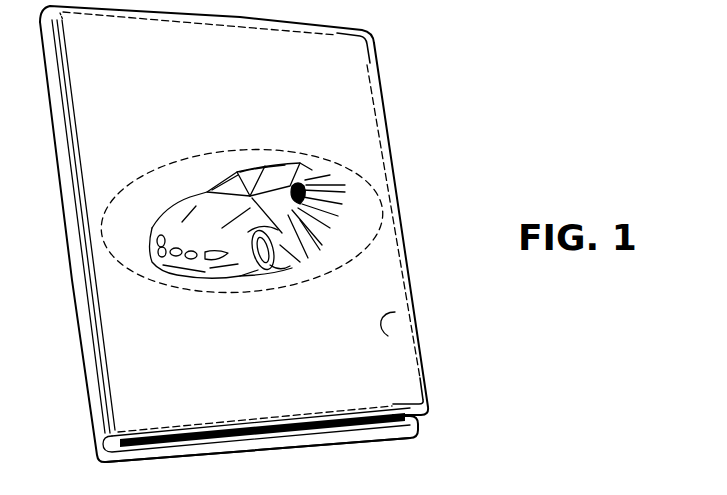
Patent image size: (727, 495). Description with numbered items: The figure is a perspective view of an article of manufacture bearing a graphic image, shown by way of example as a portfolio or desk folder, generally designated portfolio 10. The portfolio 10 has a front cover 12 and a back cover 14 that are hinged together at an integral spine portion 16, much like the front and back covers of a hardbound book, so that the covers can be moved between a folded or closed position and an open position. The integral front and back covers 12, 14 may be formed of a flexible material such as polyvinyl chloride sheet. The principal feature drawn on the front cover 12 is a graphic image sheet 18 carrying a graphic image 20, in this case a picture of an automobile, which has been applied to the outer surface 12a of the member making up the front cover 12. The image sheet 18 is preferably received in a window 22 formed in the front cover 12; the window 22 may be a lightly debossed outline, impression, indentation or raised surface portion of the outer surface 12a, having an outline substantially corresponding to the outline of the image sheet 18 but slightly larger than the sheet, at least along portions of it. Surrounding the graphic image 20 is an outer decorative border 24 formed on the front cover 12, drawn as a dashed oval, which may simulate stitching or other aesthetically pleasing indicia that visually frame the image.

The portfolio 10 is at (403, 171).
The front cover 12 is at (283, 423).
The outer surface 12a is at (393, 312).
The back cover 14 is at (349, 440).
The spine portion 16 is at (88, 342).
The graphic image sheet 18 is at (218, 272).
The graphic image 20 is at (250, 168).
The window 22 is at (287, 268).
The outer decorative border 24 is at (246, 152).